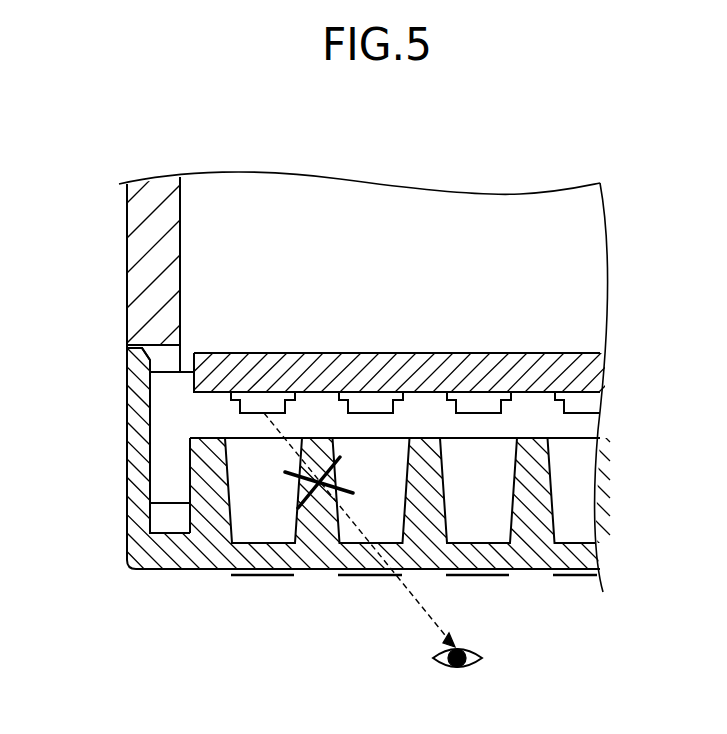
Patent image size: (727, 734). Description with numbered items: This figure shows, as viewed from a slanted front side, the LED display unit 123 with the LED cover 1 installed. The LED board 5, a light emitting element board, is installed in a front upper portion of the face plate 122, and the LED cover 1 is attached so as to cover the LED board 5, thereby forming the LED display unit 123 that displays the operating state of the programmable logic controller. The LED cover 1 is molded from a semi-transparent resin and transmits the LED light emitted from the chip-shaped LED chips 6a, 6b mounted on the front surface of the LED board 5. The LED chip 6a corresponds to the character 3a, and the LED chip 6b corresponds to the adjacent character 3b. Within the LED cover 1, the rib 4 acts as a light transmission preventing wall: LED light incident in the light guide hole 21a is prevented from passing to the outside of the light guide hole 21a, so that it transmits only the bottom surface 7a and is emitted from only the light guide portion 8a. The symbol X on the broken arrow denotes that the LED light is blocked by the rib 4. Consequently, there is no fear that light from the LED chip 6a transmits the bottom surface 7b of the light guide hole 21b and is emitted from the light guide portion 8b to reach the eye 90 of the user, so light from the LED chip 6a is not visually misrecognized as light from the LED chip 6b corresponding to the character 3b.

The LED cover 1 is at (138, 447).
The face plate 122 is at (137, 254).
The LED display unit 123 is at (112, 362).
The LED board 5 is at (473, 360).
The LED chip 6a is at (264, 403).
The LED chip 6b is at (371, 403).
The rib 4 is at (320, 537).
The bottom surface 7a is at (232, 543).
The bottom surface 7b is at (340, 543).
The light guide portion 8a is at (272, 522).
The light guide portion 8b is at (382, 522).
The character 3a is at (260, 575).
The character 3b is at (370, 575).
The light guide hole 21a is at (290, 545).
The light guide hole 21b is at (389, 545).
The eye 90 is at (468, 668).